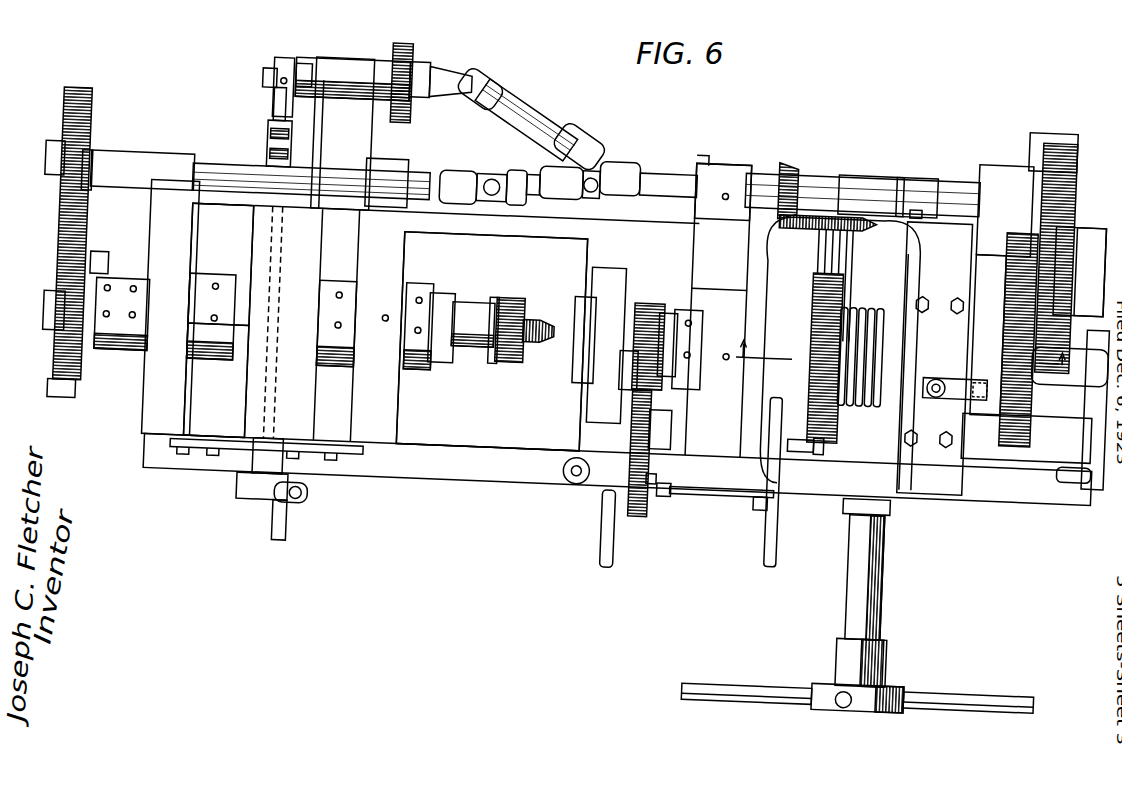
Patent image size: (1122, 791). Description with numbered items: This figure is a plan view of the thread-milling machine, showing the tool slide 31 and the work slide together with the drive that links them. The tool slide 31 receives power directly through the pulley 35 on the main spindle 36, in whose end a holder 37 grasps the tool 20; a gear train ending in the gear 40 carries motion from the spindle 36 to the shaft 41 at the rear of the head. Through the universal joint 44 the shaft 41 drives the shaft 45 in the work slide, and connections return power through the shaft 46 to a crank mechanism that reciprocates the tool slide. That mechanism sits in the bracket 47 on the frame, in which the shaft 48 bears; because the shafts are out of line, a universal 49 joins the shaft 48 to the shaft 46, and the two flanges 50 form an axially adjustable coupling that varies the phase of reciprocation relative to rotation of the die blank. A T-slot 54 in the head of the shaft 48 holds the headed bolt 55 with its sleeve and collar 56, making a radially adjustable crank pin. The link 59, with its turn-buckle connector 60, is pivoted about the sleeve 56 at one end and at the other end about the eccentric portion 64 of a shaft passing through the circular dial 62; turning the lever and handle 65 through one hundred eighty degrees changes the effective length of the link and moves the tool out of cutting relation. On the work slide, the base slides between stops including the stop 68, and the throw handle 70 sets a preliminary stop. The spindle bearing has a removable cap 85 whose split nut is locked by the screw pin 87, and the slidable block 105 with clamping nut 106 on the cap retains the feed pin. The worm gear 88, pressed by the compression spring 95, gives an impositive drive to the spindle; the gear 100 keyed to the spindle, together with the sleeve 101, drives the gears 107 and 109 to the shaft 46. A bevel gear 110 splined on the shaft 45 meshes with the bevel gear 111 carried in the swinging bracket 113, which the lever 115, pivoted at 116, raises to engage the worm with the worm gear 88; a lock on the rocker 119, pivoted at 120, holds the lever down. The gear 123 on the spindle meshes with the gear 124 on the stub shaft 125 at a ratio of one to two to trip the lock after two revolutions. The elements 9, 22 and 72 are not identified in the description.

The section line 9 is at (904, 370).
The tool 20 is at (545, 340).
The tool tip 22 is at (540, 322).
The tool slide 31 is at (390, 417).
The pulley 35 is at (245, 424).
The main shaft or spindle 36 is at (232, 300).
The holder 37 is at (90, 304).
The gear 40 is at (85, 135).
The shaft 41 is at (222, 180).
The universal joint 44 is at (530, 172).
The shaft 45 is at (660, 190).
The shaft 46 is at (660, 145).
The bracket 47 is at (340, 105).
The shaft 48 is at (432, 72).
The universal 49 is at (525, 118).
The flanges 50 is at (396, 50).
The T-slot 54 is at (305, 72).
The headed bolt 55 is at (252, 90).
The sleeve and collar 56 is at (275, 69).
The connecting rod or link 59 is at (282, 290).
The turn-buckle connector 60 is at (260, 140).
The circular dial 62 is at (296, 543).
The eccentric portion 64 is at (262, 512).
The lever and handle 65 is at (316, 500).
The stop 68 is at (1070, 462).
The throw handle 70 is at (609, 553).
The handle pedestal 72 is at (905, 675).
The removable cap 85 is at (940, 440).
The screw pin 87 is at (938, 364).
The worm gear 88 is at (820, 425).
The compression spring 95 is at (852, 280).
The gear 100 is at (1034, 414).
The sleeve 101 is at (1080, 365).
The slidable block 105 is at (982, 382).
The clamping nut 106 is at (1072, 210).
The gear 107 is at (996, 160).
The gear 109 is at (1060, 131).
The bevel gear 110 is at (785, 155).
The bevel gear 111 is at (775, 232).
The swinging arm or bracket 113 is at (885, 190).
The lever 115 is at (786, 518).
The pivot 116 is at (828, 440).
The rocker 119 is at (710, 489).
The pivot 120 is at (764, 502).
The gear 123 is at (652, 300).
The gear 124 is at (645, 513).
The stub shaft 125 is at (672, 492).